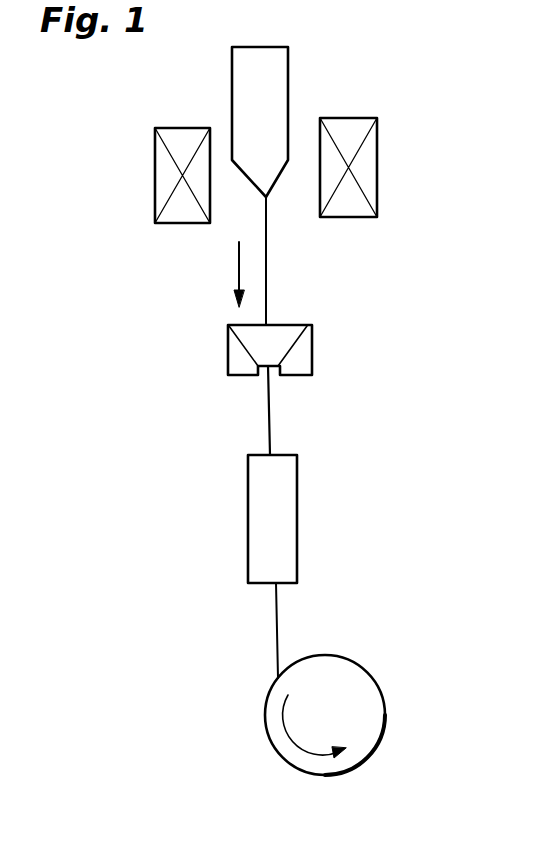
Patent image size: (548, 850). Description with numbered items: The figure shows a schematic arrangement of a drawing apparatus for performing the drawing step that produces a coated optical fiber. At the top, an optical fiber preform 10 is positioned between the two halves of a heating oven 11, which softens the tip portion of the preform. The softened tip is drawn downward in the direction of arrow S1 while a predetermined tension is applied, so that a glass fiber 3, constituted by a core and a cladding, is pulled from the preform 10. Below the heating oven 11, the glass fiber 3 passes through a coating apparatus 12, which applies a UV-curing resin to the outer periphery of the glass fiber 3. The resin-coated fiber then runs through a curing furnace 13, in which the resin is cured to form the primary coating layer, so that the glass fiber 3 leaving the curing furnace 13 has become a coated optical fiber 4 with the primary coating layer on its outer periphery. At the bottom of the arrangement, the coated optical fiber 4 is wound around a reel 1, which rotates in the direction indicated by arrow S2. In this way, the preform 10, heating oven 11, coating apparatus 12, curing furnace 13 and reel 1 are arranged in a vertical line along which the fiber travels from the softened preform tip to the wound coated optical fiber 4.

The reel 1 is at (368, 697).
The glass fiber 3 is at (268, 266).
The coated optical fiber 4 is at (280, 612).
The optical fiber preform 10 is at (289, 63).
The heating oven 11 is at (378, 156).
The coating apparatus 12 is at (303, 359).
The curing furnace 13 is at (287, 503).
The drawing direction arrow S1 is at (237, 267).
The reel rotation direction arrow S2 is at (285, 735).